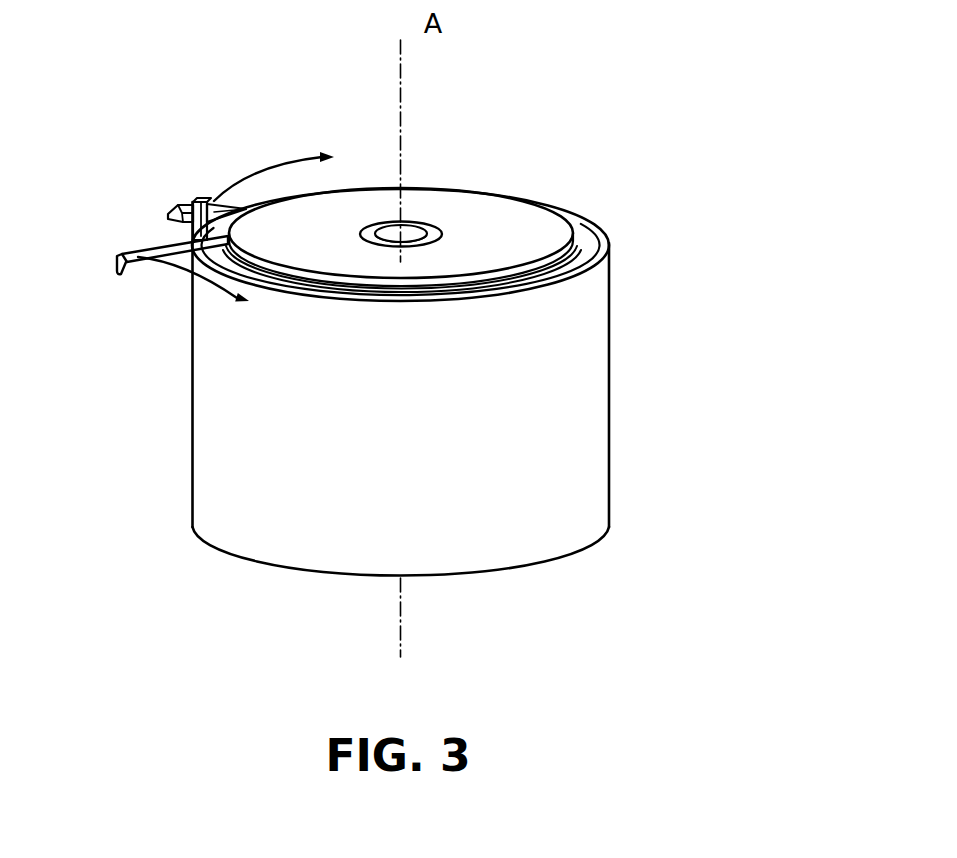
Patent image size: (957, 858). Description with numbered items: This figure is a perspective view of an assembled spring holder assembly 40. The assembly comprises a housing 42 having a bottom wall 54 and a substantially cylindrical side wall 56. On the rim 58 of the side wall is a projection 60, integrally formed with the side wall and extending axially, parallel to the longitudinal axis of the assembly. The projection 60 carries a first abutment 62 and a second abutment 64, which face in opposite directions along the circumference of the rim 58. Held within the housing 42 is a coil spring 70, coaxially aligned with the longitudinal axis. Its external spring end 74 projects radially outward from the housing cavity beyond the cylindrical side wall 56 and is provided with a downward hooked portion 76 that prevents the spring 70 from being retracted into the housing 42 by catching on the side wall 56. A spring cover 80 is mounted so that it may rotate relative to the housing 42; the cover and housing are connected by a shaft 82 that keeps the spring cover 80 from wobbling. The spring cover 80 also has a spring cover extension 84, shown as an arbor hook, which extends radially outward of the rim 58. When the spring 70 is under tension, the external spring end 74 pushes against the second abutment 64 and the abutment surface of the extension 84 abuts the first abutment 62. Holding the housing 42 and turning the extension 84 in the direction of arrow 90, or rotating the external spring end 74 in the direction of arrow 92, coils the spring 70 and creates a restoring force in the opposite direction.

The spring holder assembly 40 is at (785, 57).
The housing 42 is at (428, 400).
The bottom wall 54 is at (236, 556).
The cylindrical side wall 56 is at (592, 388).
The rim 58 is at (579, 223).
The projection 60 is at (200, 197).
The first abutment 62 is at (216, 203).
The second abutment 64 is at (200, 228).
The coil spring 70 is at (611, 238).
The external spring end 74 is at (134, 262).
The hooked portion 76 is at (117, 265).
The spring cover 80 is at (460, 236).
The shaft 82 is at (403, 231).
The spring cover extension 84 is at (183, 216).
The arrow 90 is at (293, 163).
The arrow 92 is at (167, 278).